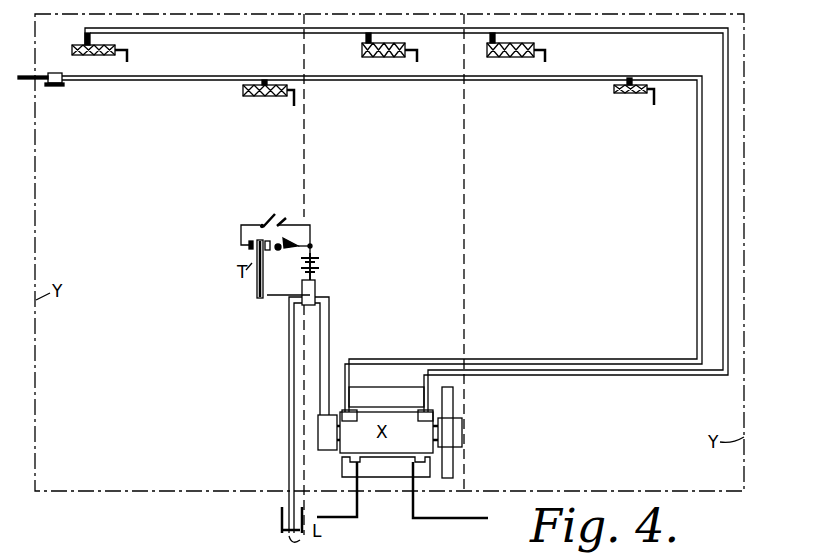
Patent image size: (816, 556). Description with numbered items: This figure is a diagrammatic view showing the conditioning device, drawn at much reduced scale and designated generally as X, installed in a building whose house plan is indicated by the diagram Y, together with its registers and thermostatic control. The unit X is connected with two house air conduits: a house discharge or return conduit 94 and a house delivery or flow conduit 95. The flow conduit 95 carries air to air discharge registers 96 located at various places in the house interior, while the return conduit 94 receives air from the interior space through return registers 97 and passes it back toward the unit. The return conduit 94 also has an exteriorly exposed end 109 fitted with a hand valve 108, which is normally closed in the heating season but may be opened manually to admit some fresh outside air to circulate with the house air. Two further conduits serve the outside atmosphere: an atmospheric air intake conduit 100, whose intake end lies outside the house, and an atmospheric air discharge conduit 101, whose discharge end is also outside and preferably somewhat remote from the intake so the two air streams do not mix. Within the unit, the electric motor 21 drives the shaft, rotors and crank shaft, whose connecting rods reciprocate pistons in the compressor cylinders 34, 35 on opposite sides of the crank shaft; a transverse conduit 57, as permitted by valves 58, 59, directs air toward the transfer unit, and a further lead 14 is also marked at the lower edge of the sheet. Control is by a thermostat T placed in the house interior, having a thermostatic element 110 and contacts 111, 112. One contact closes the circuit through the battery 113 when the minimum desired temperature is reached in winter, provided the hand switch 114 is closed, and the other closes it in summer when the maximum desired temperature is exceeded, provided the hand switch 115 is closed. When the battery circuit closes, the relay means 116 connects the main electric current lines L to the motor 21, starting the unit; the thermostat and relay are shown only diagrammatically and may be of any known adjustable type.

The house discharge or return conduit 94 is at (385, 359).
The house delivery or flow conduit 95 is at (597, 375).
The air discharge registers 96 is at (82, 40).
The return registers 97 is at (262, 97).
The hand valve 108 is at (55, 87).
The exteriorly exposed end 109 is at (27, 80).
The thermostatic element 110 is at (257, 290).
The contact 111 is at (267, 250).
The contact 112 is at (247, 247).
The battery 113 is at (322, 268).
The hand switch 114 is at (293, 254).
The hand switch 115 is at (268, 216).
The relay means 116 is at (318, 290).
The electric motor 21 is at (327, 448).
The compressor cylinder 34 is at (455, 463).
The compressor cylinder 35 is at (455, 404).
The atmospheric air intake conduit 100 is at (353, 519).
The atmospheric air discharge conduit 101 is at (437, 517).
The transverse conduit 57 is at (196, 548).
The valve 58 is at (248, 550).
The lead 14 is at (403, 551).
The valve 59 is at (526, 550).